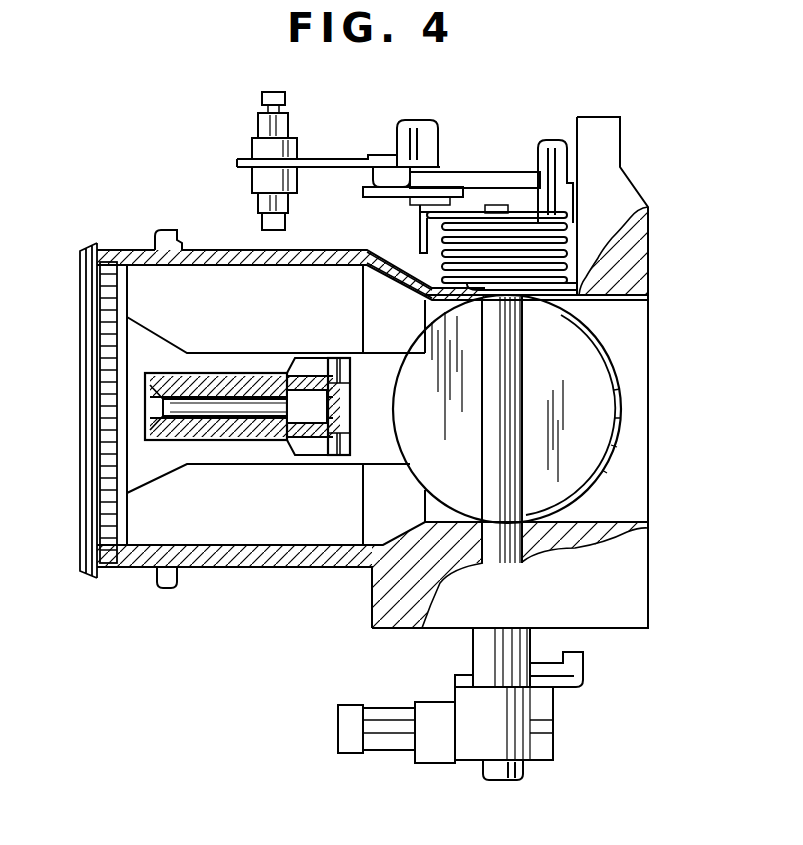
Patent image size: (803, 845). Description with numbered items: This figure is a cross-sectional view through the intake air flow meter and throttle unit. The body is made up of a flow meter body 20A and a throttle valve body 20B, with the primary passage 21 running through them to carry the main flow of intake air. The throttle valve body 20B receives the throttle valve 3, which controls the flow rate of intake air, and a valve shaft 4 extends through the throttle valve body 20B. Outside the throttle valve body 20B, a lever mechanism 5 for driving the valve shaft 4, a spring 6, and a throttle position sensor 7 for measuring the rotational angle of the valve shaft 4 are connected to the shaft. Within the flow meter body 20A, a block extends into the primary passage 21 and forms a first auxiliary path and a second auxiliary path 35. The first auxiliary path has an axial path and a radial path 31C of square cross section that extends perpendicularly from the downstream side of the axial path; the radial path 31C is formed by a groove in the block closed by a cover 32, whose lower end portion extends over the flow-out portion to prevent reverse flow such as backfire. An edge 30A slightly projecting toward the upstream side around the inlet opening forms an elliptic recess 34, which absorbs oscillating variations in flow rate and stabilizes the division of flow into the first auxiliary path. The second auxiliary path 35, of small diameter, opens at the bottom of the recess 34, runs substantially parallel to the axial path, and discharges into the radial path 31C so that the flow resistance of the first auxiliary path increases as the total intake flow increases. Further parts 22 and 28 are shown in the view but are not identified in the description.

The throttle valve 3 is at (597, 423).
The valve shaft 4 is at (507, 370).
The lever mechanism 5 is at (347, 158).
The spring 6 is at (510, 237).
The throttle position sensor 7 is at (467, 700).
The flow meter body 20A is at (282, 404).
The throttle valve body 20B is at (632, 536).
The primary passage 21 is at (195, 295).
The inclined wall 22 is at (398, 288).
The mesh screen 28 is at (138, 353).
The edge 30A is at (176, 441).
The radial path 31C is at (313, 412).
The cover 32 is at (340, 412).
The elliptic recess 34 is at (160, 408).
The second auxiliary path 35 is at (238, 405).